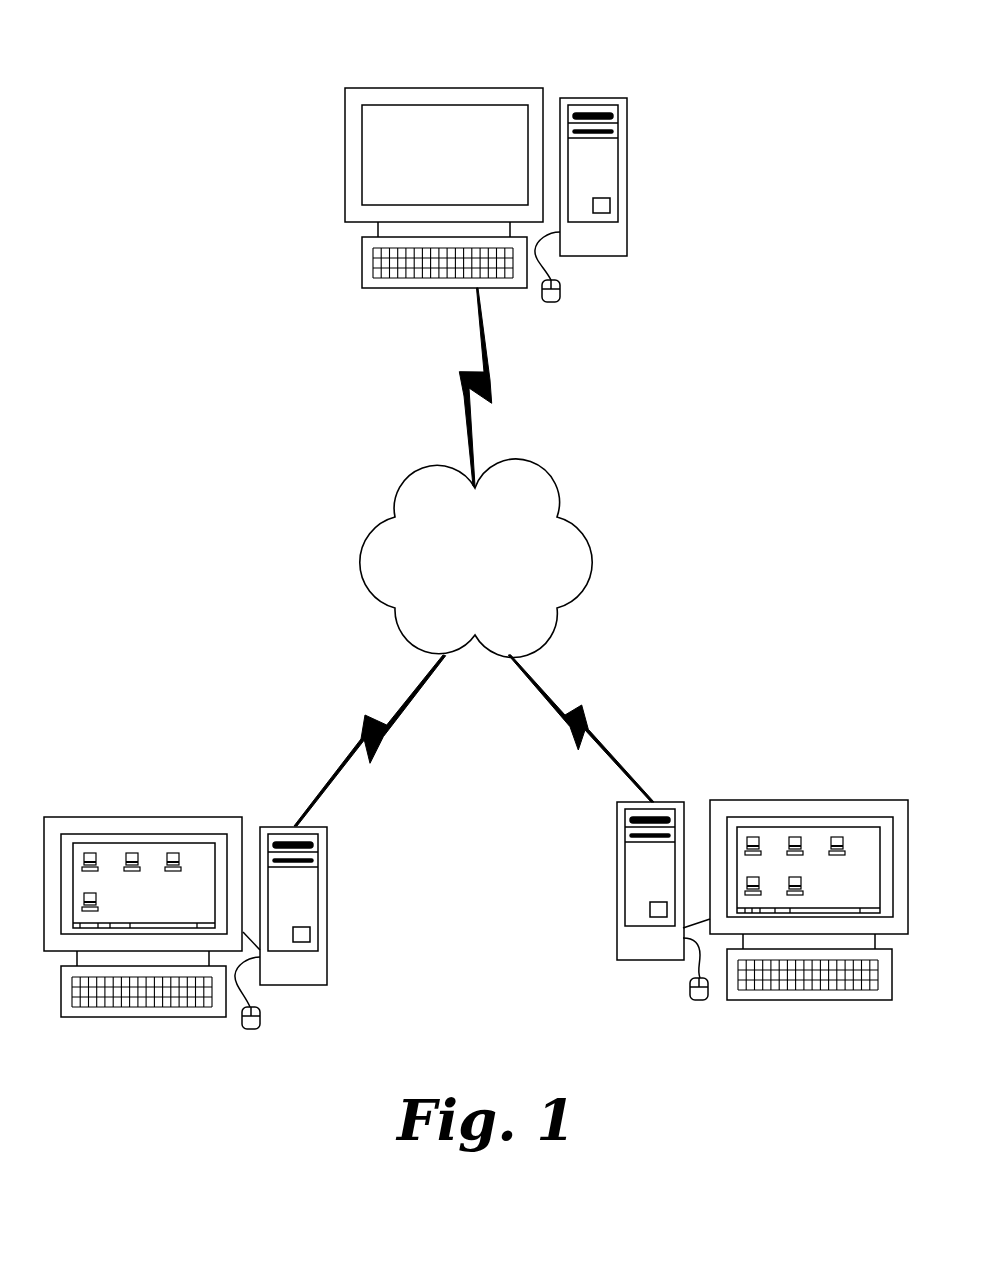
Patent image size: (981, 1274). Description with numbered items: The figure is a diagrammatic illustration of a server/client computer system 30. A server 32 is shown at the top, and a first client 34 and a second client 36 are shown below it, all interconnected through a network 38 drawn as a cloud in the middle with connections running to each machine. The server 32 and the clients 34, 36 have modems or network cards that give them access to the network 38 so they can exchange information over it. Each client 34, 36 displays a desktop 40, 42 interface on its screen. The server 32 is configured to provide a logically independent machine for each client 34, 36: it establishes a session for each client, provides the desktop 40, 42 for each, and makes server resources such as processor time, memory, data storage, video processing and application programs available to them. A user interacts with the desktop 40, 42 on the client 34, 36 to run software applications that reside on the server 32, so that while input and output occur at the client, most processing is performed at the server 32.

The server/client computer system 30 is at (777, 290).
The server 32 is at (432, 65).
The first client 34 is at (130, 1103).
The second client 36 is at (802, 1094).
The network 38 is at (462, 587).
The desktop 40 is at (193, 850).
The desktop 42 is at (850, 828).